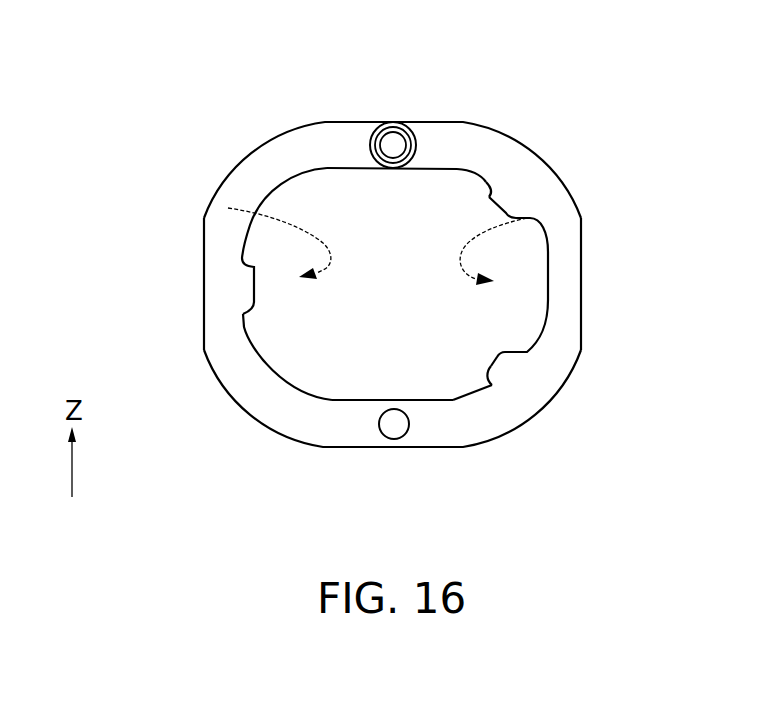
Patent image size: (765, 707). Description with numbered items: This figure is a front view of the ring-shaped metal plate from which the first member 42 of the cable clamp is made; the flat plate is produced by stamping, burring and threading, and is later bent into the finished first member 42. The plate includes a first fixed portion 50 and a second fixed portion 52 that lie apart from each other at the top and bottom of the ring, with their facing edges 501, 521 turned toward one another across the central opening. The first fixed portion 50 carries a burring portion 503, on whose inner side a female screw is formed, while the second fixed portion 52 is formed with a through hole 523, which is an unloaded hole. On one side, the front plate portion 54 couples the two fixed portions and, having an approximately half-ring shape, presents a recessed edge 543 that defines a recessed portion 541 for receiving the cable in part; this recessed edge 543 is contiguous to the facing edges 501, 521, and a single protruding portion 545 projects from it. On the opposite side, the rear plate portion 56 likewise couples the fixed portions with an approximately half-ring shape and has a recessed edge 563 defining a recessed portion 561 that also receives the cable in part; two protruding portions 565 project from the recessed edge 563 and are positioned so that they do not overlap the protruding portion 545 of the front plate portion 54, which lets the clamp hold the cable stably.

The first member 42 is at (410, 39).
The first fixed portion 50 is at (362, 145).
The facing edge 501 is at (388, 170).
The burring portion 503 is at (410, 132).
The second fixed portion 52 is at (368, 432).
The facing edge 521 is at (395, 400).
The through hole 523 is at (402, 436).
The front plate portion 54 is at (223, 292).
The recessed portion 541 is at (228, 208).
The recessed edge 543 is at (262, 337).
The protruding portion 545 is at (250, 283).
The rear plate portion 56 is at (563, 287).
The recessed portion 561 is at (527, 218).
The recessed edge 563 is at (533, 303).
The protruding portions 565 is at (503, 202).